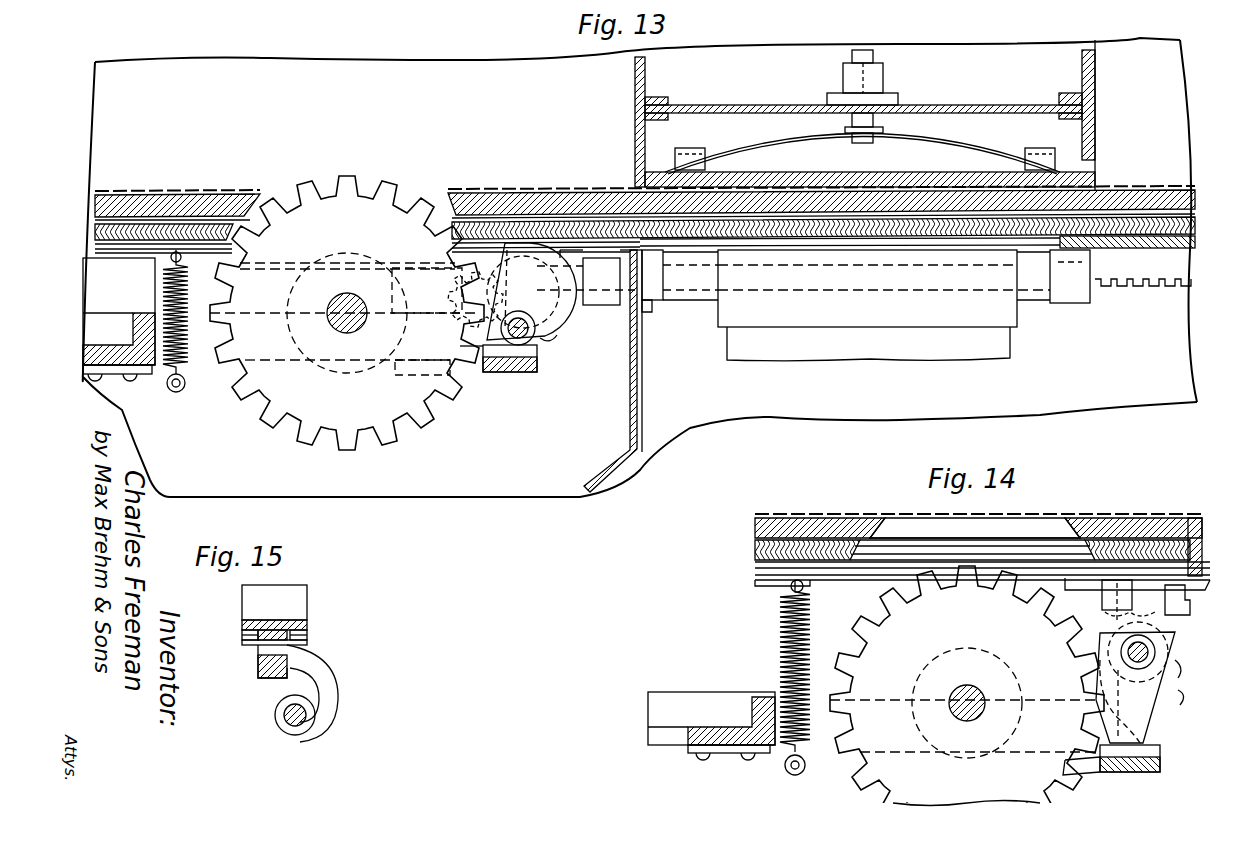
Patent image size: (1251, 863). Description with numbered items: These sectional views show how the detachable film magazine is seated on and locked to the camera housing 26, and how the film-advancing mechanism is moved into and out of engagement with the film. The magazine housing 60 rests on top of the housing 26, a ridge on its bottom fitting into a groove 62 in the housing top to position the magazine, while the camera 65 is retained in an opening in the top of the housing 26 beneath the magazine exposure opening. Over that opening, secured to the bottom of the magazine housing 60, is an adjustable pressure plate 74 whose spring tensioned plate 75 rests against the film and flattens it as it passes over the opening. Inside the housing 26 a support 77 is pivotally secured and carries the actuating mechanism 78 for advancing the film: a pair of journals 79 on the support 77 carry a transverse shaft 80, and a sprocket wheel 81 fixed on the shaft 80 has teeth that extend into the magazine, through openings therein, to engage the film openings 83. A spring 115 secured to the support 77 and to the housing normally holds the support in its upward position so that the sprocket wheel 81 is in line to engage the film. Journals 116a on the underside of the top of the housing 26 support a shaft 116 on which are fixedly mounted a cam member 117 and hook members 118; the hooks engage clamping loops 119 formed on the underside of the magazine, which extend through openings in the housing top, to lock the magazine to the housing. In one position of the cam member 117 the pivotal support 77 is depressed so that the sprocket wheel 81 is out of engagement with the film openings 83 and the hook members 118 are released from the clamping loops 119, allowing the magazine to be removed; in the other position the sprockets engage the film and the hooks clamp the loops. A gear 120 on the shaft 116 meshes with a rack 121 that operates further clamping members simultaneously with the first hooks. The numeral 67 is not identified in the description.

In FIG. 13, the housing 26 is at (95, 246).
In FIG. 14, the housing 26 is at (755, 566).
In FIG. 15, the housing 26 is at (308, 632).
In FIG. 13, the magazine housing 60 is at (440, 60).
In FIG. 15, the magazine housing 60 is at (300, 617).
In FIG. 13, the groove 62 is at (1146, 260).
In FIG. 14, the groove 62 is at (755, 578).
In FIG. 15, the groove 62 is at (308, 645).
In FIG. 13, the camera 65 is at (890, 355).
In FIG. 14, the slot 67 is at (920, 536).
In FIG. 13, the adjustable pressure plate 74 is at (977, 97).
In FIG. 13, the spring tensioned plate 75 is at (903, 173).
In FIG. 13, the support 77 is at (100, 330).
In FIG. 14, the support 77 is at (650, 728).
In FIG. 13, the actuating mechanism 78 is at (469, 382).
In FIG. 13, the journals 79 is at (347, 324).
In FIG. 14, the journals 79 is at (967, 703).
In FIG. 13, the transverse shaft 80 is at (340, 311).
In FIG. 14, the transverse shaft 80 is at (982, 700).
In FIG. 13, the sprocket wheel 81 is at (334, 437).
In FIG. 14, the sprocket wheel 81 is at (895, 600).
In FIG. 13, the film openings 83 is at (405, 193).
In FIG. 14, the film openings 83 is at (1040, 518).
In FIG. 13, the spring 115 is at (162, 273).
In FIG. 14, the spring 115 is at (780, 648).
In FIG. 13, the shaft 116 is at (528, 368).
In FIG. 14, the shaft 116 is at (1120, 652).
In FIG. 15, the shaft 116 is at (296, 727).
In FIG. 14, the journals 116a is at (1150, 600).
In FIG. 13, the cam member 117 is at (540, 243).
In FIG. 14, the cam member 117 is at (1105, 725).
In FIG. 13, the hook members 118 is at (568, 303).
In FIG. 14, the hook members 118 is at (1152, 712).
In FIG. 13, the clamping loops 119 is at (468, 306).
In FIG. 14, the clamping loops 119 is at (1108, 598).
In FIG. 15, the clamping loops 119 is at (260, 676).
In FIG. 13, the gear 120 is at (553, 343).
In FIG. 14, the gear 120 is at (1166, 670).
In FIG. 13, the rack 121 is at (690, 292).
In FIG. 14, the rack 121 is at (1185, 612).